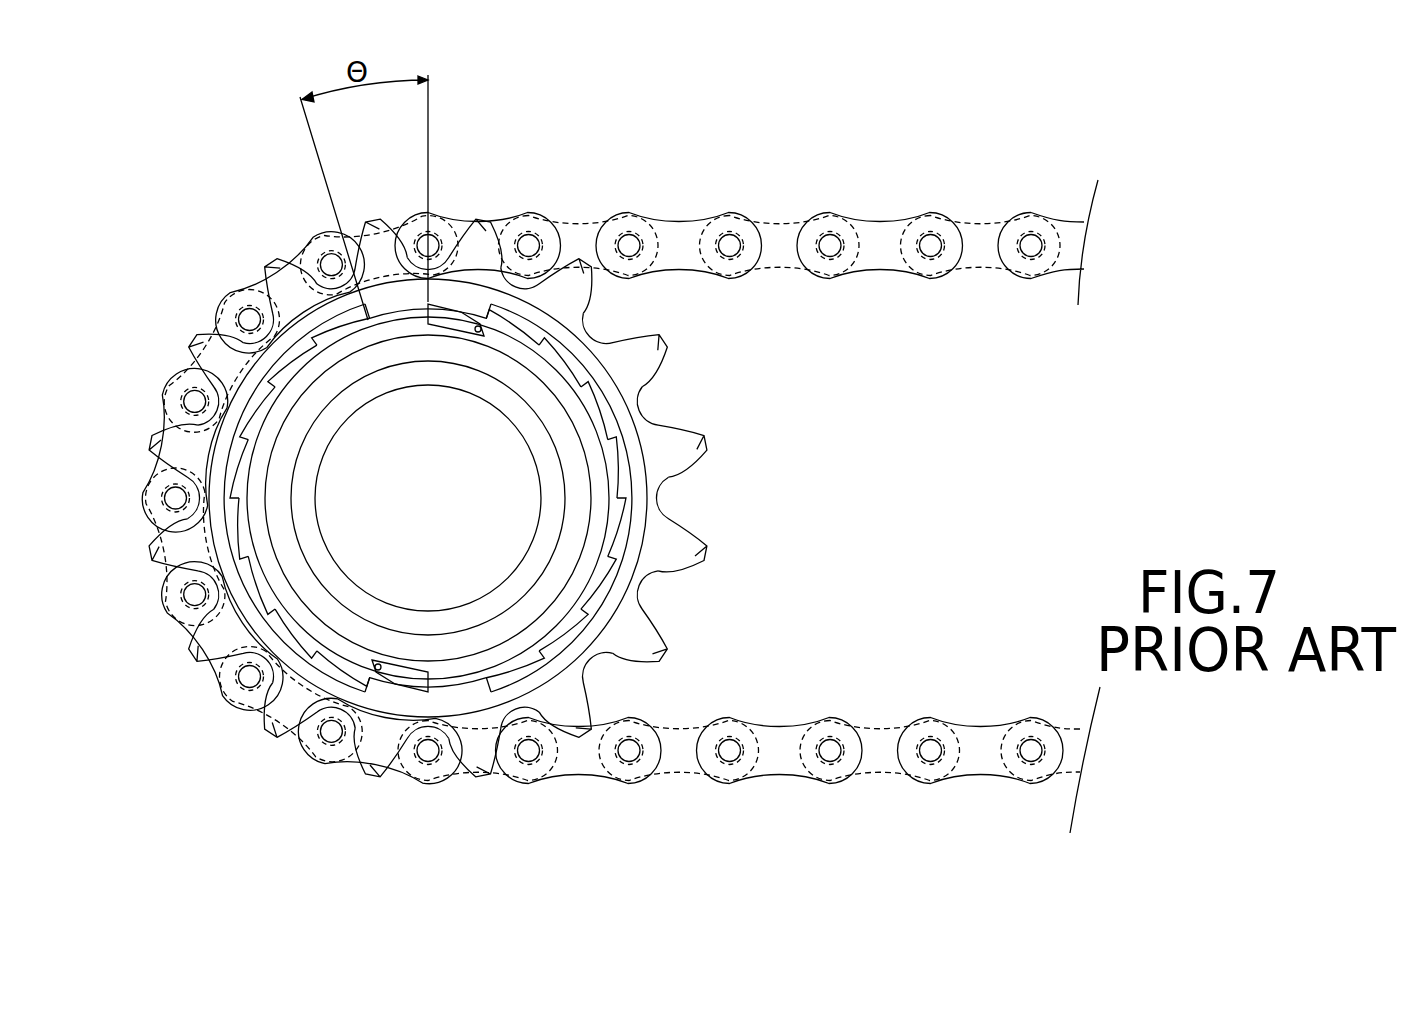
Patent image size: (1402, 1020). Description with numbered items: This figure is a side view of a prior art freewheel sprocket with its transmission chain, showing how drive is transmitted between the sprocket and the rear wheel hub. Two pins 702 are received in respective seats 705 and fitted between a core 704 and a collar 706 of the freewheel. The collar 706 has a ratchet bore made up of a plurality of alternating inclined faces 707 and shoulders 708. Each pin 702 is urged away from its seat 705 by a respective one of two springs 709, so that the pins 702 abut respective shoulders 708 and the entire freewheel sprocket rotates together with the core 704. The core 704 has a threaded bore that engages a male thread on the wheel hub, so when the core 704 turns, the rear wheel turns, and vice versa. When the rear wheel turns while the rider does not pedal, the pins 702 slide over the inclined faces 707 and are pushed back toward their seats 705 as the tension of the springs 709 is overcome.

The pin 702 is at (470, 296).
The core 704 is at (270, 272).
The seat 705 is at (389, 690).
The collar 706 is at (247, 457).
The inclined face 707 is at (567, 633).
The shoulder 708 is at (494, 683).
The spring 709 is at (435, 324).